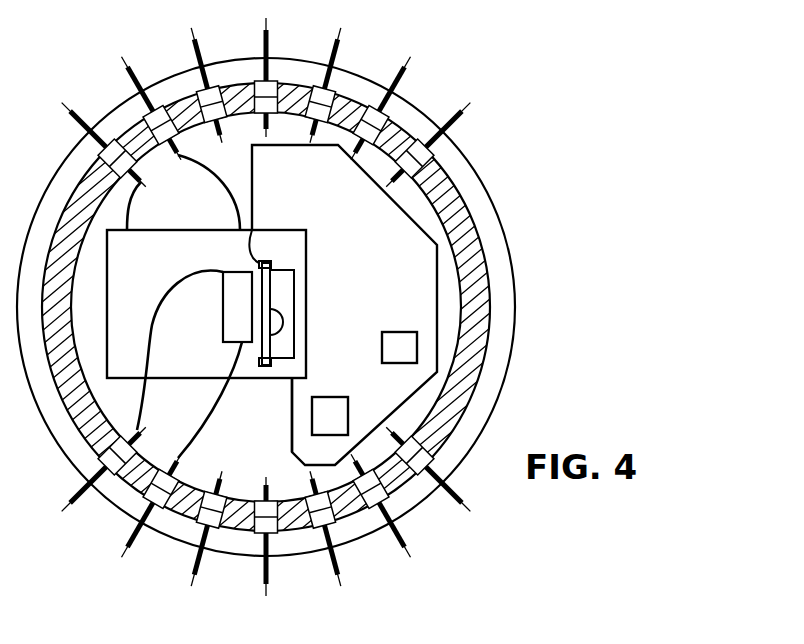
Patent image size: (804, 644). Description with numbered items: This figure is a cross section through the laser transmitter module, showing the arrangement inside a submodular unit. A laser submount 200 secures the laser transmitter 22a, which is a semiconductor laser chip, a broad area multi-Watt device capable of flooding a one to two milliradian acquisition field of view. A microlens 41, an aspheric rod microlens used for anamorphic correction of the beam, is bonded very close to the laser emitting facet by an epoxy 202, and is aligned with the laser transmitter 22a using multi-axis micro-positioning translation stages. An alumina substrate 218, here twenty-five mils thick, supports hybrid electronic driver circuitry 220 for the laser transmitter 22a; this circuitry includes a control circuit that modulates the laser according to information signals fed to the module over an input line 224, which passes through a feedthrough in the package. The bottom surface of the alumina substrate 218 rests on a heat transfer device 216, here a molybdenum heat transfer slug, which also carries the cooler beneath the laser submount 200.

The laser submount 200 is at (157, 265).
The epoxy 202 is at (253, 229).
The microlens 41 is at (271, 277).
The laser transmitter 22a is at (271, 300).
The alumina substrate 218 is at (406, 262).
The hybrid electronic driver circuitry 220 is at (388, 330).
The input line 224 is at (294, 393).
The heat transfer device 216 is at (198, 418).